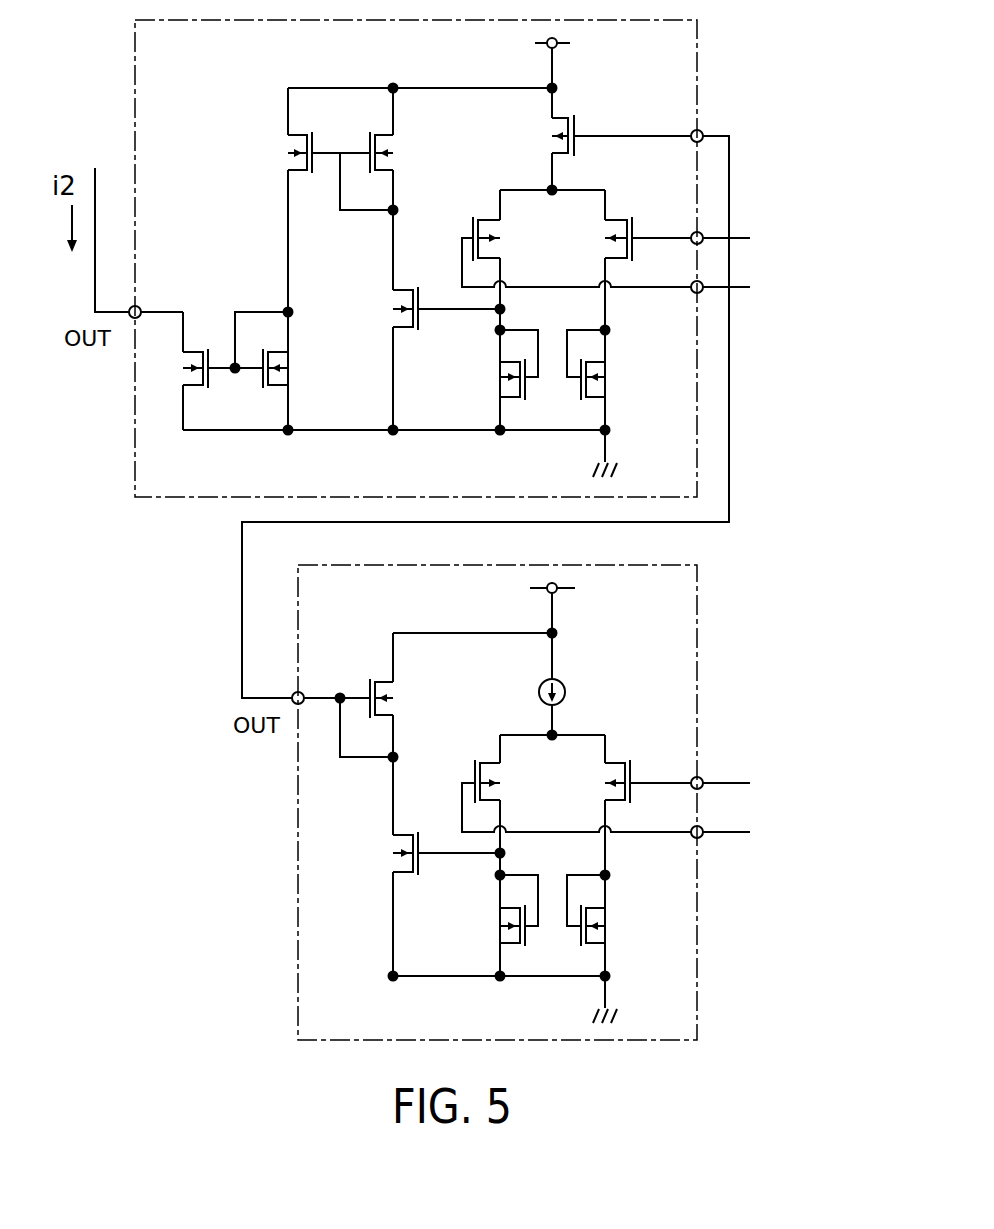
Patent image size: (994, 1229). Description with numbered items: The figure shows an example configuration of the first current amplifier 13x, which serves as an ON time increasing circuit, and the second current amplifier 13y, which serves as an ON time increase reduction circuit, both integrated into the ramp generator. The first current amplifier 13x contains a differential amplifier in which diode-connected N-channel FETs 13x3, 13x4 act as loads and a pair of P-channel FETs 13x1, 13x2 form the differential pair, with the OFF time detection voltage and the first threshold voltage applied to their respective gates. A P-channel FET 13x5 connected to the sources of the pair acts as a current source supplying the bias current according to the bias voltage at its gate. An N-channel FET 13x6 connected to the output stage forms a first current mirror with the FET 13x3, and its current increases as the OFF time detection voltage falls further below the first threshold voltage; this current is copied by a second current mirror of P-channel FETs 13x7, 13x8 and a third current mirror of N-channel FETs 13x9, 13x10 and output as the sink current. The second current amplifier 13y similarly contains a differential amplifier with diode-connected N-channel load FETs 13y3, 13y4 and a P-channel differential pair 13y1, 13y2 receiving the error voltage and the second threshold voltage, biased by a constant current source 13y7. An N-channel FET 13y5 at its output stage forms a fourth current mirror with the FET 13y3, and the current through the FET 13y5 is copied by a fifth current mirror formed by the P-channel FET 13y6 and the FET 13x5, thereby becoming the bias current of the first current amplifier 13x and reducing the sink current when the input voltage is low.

The first current amplifier 13x is at (668, 48).
The P-channel FET 13x1 is at (462, 225).
The P-channel FET 13x2 is at (638, 225).
The diode-connected N-channel FET 13x3 is at (477, 379).
The diode-connected N-channel FET 13x4 is at (631, 379).
The P-channel FET 13x5 is at (591, 123).
The N-channel FET 13x6 is at (370, 310).
The P-channel FET 13x7 is at (423, 150).
The P-channel FET 13x8 is at (261, 152).
The N-channel FET 13x9 is at (314, 368).
The N-channel FET 13x10 is at (224, 384).
The second current amplifier 13y is at (668, 593).
The P-channel FET 13y1 is at (462, 768).
The P-channel FET 13y2 is at (638, 768).
The diode-connected N-channel FET 13y3 is at (477, 925).
The diode-connected N-channel FET 13y4 is at (631, 925).
The N-channel FET 13y5 is at (369, 856).
The P-channel FET 13y6 is at (356, 677).
The constant current source 13y7 is at (587, 691).